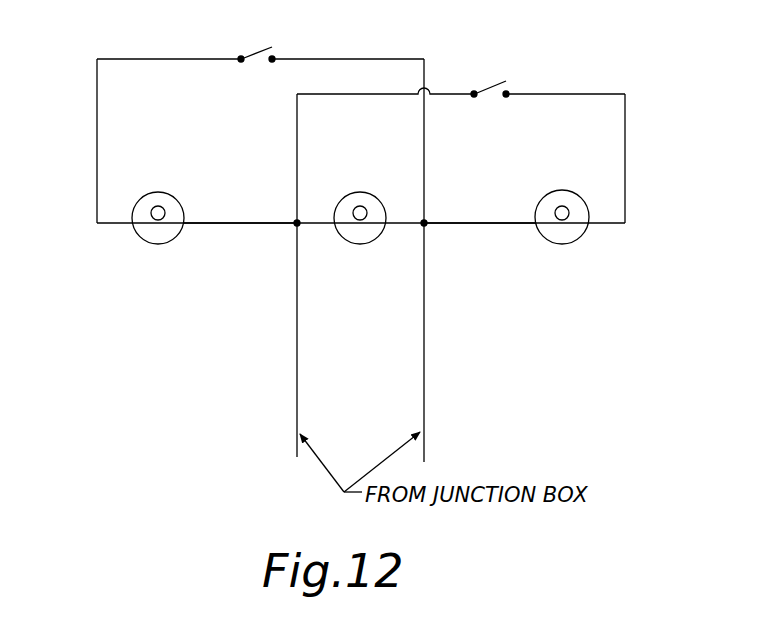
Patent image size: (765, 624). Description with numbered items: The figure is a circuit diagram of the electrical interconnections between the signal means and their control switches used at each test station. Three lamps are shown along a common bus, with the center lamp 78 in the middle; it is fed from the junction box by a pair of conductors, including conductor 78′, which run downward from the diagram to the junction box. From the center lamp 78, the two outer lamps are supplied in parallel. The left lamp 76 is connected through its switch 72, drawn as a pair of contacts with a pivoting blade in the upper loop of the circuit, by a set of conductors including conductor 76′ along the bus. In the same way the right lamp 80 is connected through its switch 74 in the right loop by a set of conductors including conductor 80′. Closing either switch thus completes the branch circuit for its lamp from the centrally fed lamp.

The switch 72 is at (256, 48).
The switch 74 is at (495, 82).
The lamp 76 is at (157, 244).
The conductor 76′ is at (230, 224).
The center lamp 78 is at (370, 244).
The conductor 78′ is at (297, 357).
The lamp 80 is at (568, 244).
The conductor 80′ is at (453, 224).